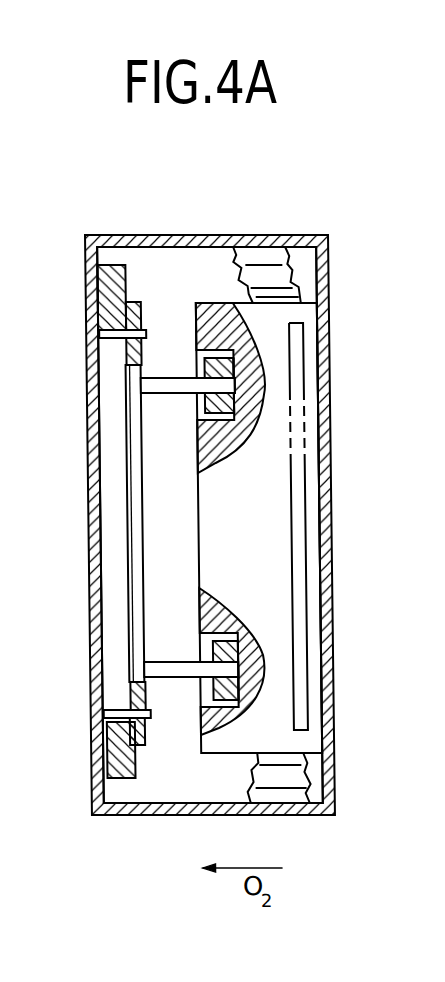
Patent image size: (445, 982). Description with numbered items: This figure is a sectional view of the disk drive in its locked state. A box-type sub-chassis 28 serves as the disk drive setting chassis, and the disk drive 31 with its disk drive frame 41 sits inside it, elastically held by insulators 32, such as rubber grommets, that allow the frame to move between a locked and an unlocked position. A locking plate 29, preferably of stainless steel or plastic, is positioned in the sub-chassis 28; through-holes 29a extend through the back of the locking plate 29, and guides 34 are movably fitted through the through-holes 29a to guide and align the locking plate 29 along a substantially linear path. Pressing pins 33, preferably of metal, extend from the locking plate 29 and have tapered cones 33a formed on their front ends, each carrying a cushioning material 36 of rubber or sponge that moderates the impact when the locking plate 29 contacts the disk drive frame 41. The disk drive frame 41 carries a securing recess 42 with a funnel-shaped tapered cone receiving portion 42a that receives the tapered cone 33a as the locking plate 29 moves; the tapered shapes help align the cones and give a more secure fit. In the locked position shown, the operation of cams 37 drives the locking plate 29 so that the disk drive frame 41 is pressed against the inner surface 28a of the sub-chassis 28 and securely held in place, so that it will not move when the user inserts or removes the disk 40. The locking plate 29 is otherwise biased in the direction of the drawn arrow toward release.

The sub-chassis 28 is at (297, 236).
The inner surface of the sub-chassis 28a is at (303, 355).
The locking plate 29 is at (129, 574).
The through-holes 29a is at (117, 336).
The disk drive 31 is at (154, 507).
The insulators 32 is at (258, 255).
The pressing pins 33 is at (163, 382).
The tapered cones 33a is at (233, 380).
The guides 34 is at (126, 321).
The cushioning material 36 is at (217, 340).
The cams 37 is at (105, 262).
The disk 40 is at (302, 473).
The disk drive frame 41 is at (301, 445).
The securing recess 42 is at (203, 642).
The tapered cone receiving portion 42a is at (248, 368).